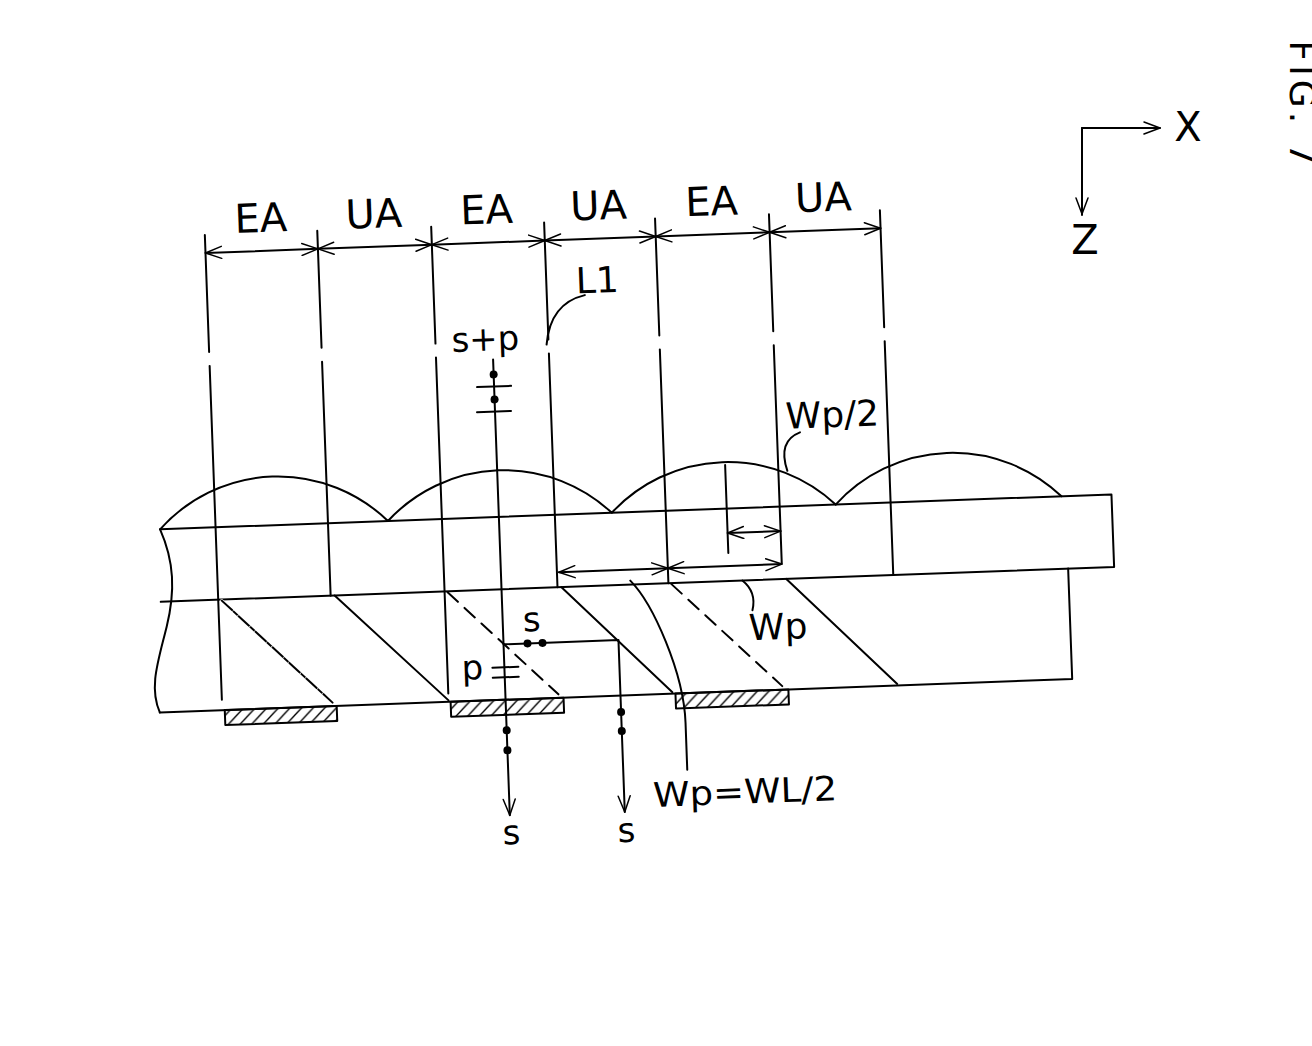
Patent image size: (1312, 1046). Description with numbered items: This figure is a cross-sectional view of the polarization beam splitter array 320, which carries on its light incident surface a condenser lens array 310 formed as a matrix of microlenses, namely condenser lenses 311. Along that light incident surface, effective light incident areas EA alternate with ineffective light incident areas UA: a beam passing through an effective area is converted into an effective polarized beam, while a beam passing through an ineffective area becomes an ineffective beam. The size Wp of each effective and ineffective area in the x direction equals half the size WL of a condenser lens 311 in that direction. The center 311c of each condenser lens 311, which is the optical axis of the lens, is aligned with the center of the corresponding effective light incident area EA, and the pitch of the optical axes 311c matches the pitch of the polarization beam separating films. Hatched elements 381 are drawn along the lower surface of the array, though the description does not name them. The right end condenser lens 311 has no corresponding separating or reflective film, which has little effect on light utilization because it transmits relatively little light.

The condenser lens array 310 is at (671, 510).
The condenser lens 311 is at (1021, 515).
The center of the condenser lens 311c is at (714, 479).
The polarization beam splitter array 320 is at (1065, 727).
The light-emitting element pad 381 is at (271, 726).